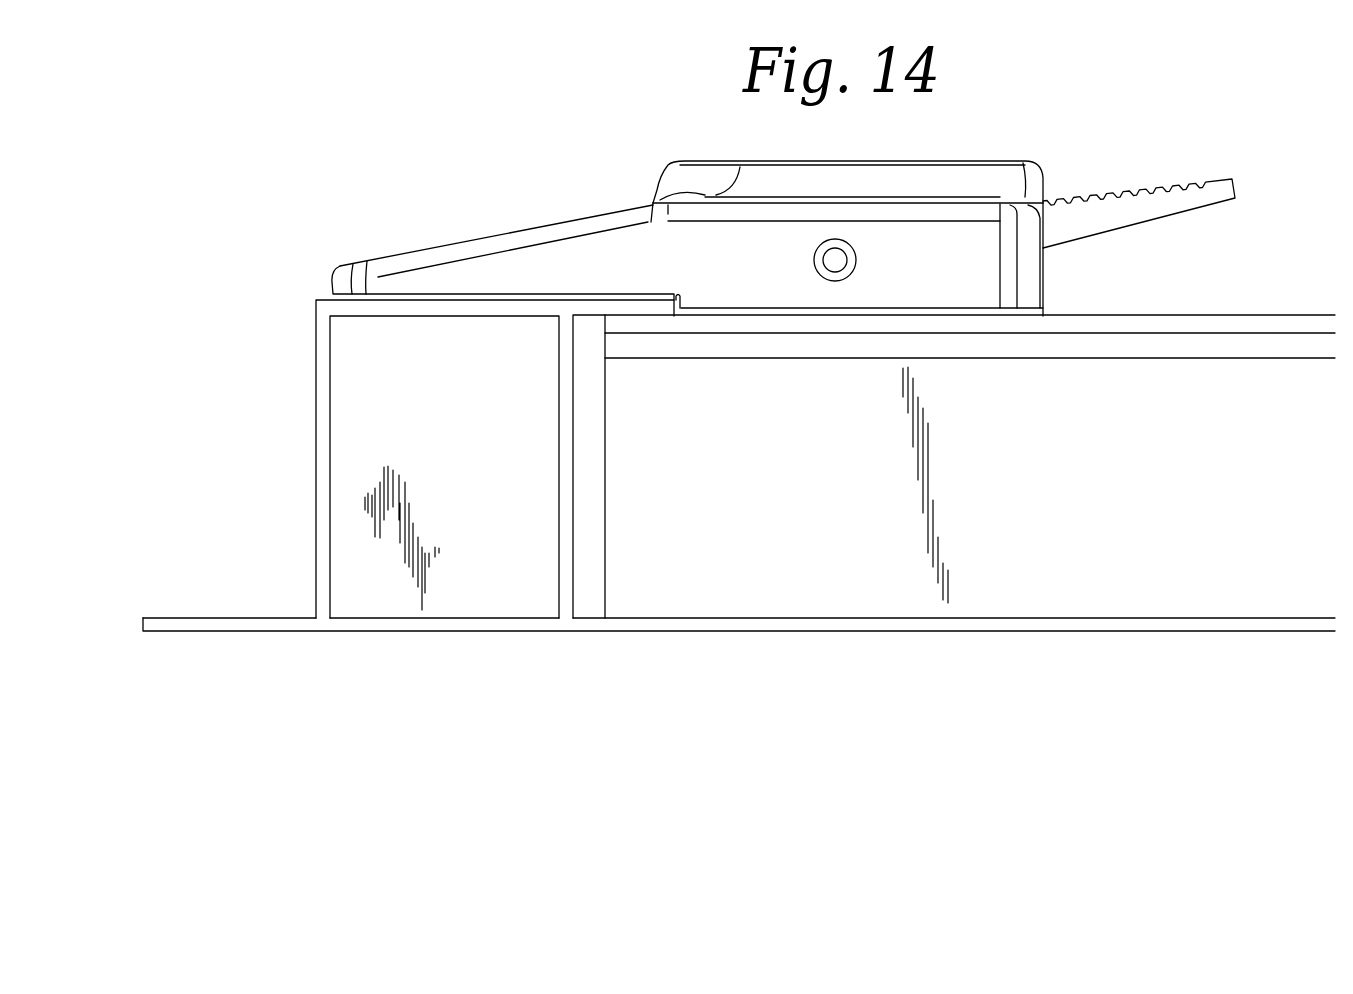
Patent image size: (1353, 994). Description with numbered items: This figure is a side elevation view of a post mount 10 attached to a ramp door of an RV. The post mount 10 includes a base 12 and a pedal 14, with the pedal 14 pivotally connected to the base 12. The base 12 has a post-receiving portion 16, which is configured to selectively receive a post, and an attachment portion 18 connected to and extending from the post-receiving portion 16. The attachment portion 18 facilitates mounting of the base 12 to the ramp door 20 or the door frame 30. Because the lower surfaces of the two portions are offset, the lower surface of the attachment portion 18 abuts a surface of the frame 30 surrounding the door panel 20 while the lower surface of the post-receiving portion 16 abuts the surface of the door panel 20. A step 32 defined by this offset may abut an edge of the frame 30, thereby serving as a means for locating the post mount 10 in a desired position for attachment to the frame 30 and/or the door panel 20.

The post mount 10 is at (490, 187).
The base 12 is at (673, 268).
The pedal 14 is at (1090, 228).
The post-receiving portion 16 is at (937, 281).
The attachment portion 18 is at (533, 283).
The ramp door 20 is at (797, 483).
The door frame 30 is at (455, 461).
The step 32 is at (681, 307).